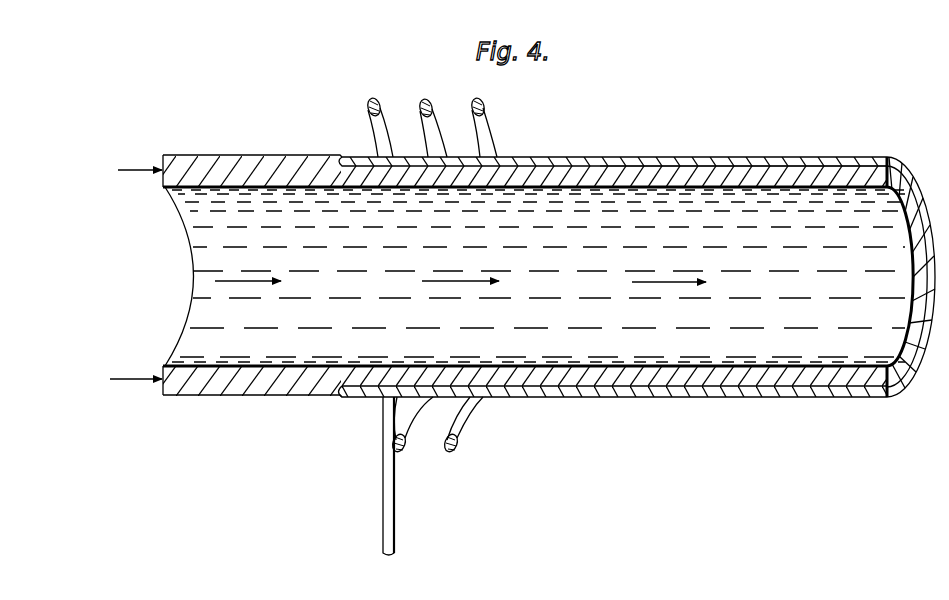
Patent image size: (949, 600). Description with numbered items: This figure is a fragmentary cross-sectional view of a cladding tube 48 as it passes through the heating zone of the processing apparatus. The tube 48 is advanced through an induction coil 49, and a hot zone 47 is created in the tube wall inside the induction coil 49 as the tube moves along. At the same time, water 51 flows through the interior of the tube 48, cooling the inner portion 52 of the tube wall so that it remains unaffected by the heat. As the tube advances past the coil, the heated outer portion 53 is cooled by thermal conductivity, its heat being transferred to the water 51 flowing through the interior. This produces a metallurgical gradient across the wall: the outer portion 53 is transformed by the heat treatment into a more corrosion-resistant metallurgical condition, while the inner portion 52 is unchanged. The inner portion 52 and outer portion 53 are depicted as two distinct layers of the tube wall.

The hot zone 47 is at (519, 158).
The tube 48 is at (599, 156).
The induction coil 49 is at (372, 100).
The water 51 is at (797, 238).
The inner portion 52 is at (670, 173).
The outer portion 53 is at (742, 160).